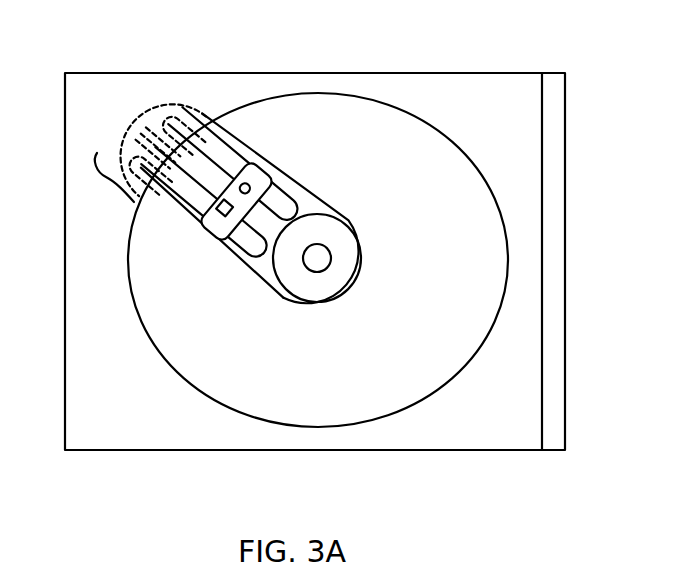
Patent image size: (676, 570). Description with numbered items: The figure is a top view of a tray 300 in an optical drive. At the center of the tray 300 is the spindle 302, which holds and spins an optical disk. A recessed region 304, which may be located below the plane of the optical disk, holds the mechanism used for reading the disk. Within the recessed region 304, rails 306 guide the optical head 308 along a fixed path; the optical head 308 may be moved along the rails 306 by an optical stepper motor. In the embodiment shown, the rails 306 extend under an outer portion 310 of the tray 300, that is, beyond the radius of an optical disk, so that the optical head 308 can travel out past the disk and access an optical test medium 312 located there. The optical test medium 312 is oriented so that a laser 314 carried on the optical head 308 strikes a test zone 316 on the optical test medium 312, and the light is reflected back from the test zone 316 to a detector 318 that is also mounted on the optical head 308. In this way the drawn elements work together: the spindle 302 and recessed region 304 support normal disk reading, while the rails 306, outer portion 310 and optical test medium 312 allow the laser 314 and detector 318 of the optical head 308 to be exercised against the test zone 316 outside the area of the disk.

The tray 300 is at (331, 517).
The spindle 302 is at (327, 301).
The recessed region 304 is at (323, 201).
The rails 306 is at (247, 262).
The optical head 308 is at (209, 238).
The outer portion 310 is at (108, 188).
The optical test medium 312 is at (150, 127).
The laser 314 is at (276, 186).
The test zone 316 is at (140, 127).
The detector 318 is at (230, 198).